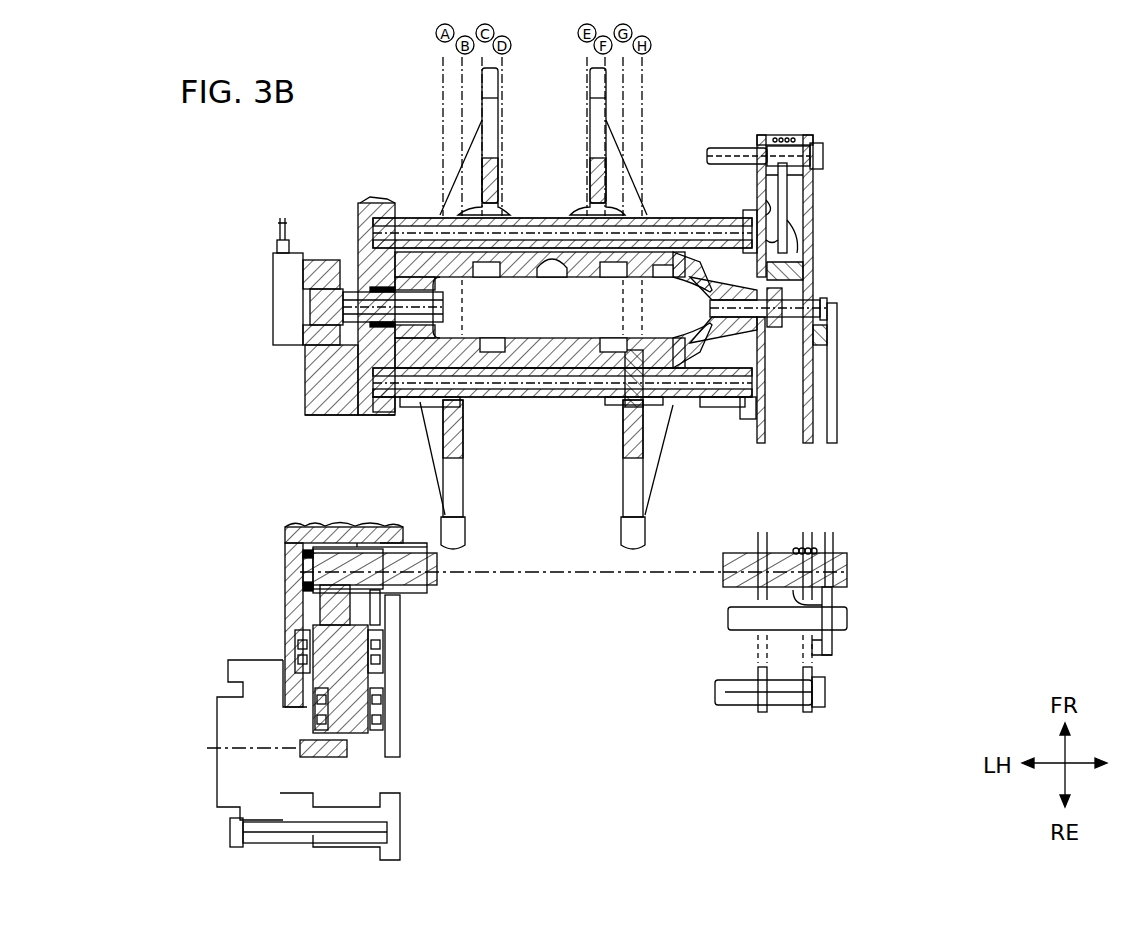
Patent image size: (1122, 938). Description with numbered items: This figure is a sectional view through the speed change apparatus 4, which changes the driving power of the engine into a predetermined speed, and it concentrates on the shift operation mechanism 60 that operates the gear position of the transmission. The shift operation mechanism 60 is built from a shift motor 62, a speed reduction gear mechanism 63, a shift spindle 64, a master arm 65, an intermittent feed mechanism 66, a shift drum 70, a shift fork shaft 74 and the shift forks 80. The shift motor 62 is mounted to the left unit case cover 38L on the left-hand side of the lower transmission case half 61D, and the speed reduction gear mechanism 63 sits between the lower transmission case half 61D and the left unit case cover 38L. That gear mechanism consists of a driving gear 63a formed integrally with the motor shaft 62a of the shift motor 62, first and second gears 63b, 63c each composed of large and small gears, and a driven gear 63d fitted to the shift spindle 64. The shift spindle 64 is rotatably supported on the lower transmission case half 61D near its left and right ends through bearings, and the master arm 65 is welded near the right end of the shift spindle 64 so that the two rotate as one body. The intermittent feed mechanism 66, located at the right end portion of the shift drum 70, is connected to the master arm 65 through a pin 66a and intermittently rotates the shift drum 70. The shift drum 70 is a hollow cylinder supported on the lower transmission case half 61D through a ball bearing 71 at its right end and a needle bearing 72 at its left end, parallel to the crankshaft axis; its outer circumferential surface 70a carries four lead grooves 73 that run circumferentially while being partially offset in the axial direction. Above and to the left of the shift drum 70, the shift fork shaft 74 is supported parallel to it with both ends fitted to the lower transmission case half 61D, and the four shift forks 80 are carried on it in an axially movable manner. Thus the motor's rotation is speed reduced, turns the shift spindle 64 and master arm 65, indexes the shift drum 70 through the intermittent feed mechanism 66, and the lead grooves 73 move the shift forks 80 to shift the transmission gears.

The speed change apparatus 4 is at (722, 735).
The left unit case cover 38L is at (307, 523).
The shift operation mechanism 60 is at (604, 600).
The lower transmission case half 61D is at (747, 408).
The shift motor 62 is at (232, 783).
The motor shaft 62a is at (467, 755).
The speed reduction gear mechanism 63 is at (416, 689).
The driving gear 63a is at (330, 757).
The first gear 63b is at (380, 692).
The second gear 63c is at (385, 650).
The driven gear 63d is at (395, 612).
The shift spindle 64 is at (840, 563).
The master arm 65 is at (835, 405).
The intermittent feed mechanism 66 is at (818, 282).
The pin 66a is at (837, 337).
The shift drum 70 is at (553, 354).
The outer circumferential surface 70a is at (511, 350).
The ball bearing 71 is at (762, 358).
The needle bearing 72 is at (390, 290).
The lead groove 73 is at (540, 268).
The shift fork shaft 74 is at (705, 220).
The shift fork 80 is at (500, 110).